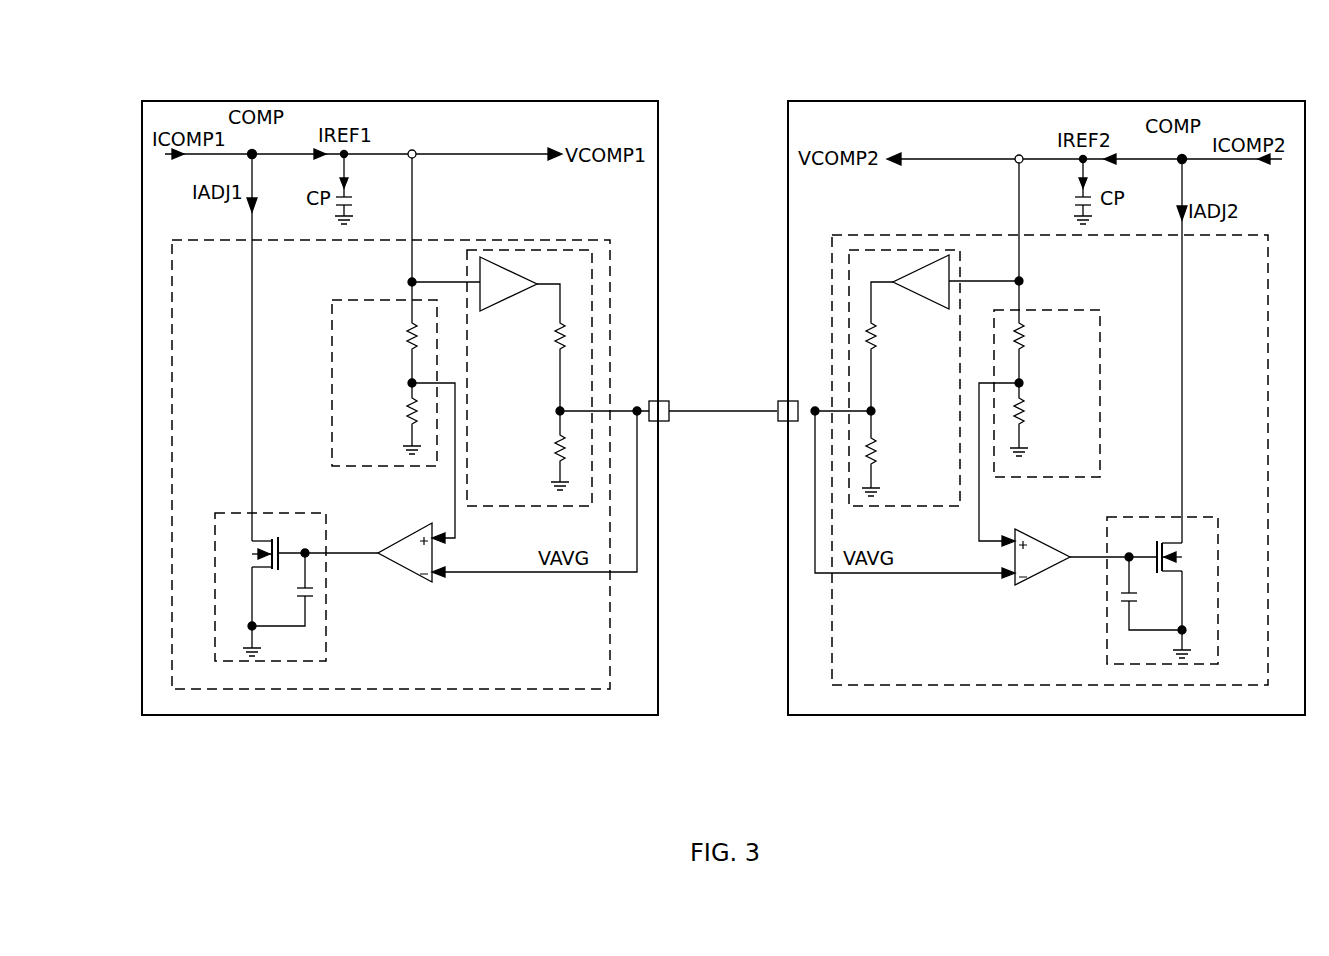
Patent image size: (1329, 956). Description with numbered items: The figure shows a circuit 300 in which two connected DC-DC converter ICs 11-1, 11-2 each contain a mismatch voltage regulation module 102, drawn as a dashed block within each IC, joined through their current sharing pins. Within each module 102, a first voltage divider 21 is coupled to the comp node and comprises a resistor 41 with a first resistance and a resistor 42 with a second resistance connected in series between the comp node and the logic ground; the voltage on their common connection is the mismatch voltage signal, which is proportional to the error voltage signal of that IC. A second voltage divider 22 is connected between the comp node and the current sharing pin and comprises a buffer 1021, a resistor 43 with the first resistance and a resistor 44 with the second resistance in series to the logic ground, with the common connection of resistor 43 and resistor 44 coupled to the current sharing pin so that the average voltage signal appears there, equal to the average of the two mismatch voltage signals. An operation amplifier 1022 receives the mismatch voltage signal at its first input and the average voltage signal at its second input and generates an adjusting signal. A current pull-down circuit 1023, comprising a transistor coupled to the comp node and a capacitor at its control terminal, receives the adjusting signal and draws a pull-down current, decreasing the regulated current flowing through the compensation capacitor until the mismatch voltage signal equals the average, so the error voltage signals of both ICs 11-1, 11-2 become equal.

The current balancing circuit 300 is at (726, 57).
The first DC-DC converter IC 11-1 is at (398, 101).
The second DC-DC converter IC 11-2 is at (996, 101).
The mismatch voltage regulation module 102 is at (480, 240).
The buffer 1021 is at (501, 266).
The operation amplifier 1022 is at (412, 537).
The current pull-down circuit 1023 is at (216, 522).
The first voltage divider 21 is at (332, 437).
The second voltage divider 22 is at (560, 506).
The resistor 41 is at (714, 357).
The resistor 42 is at (715, 413).
The resistor 43 is at (719, 377).
The resistor 44 is at (716, 449).